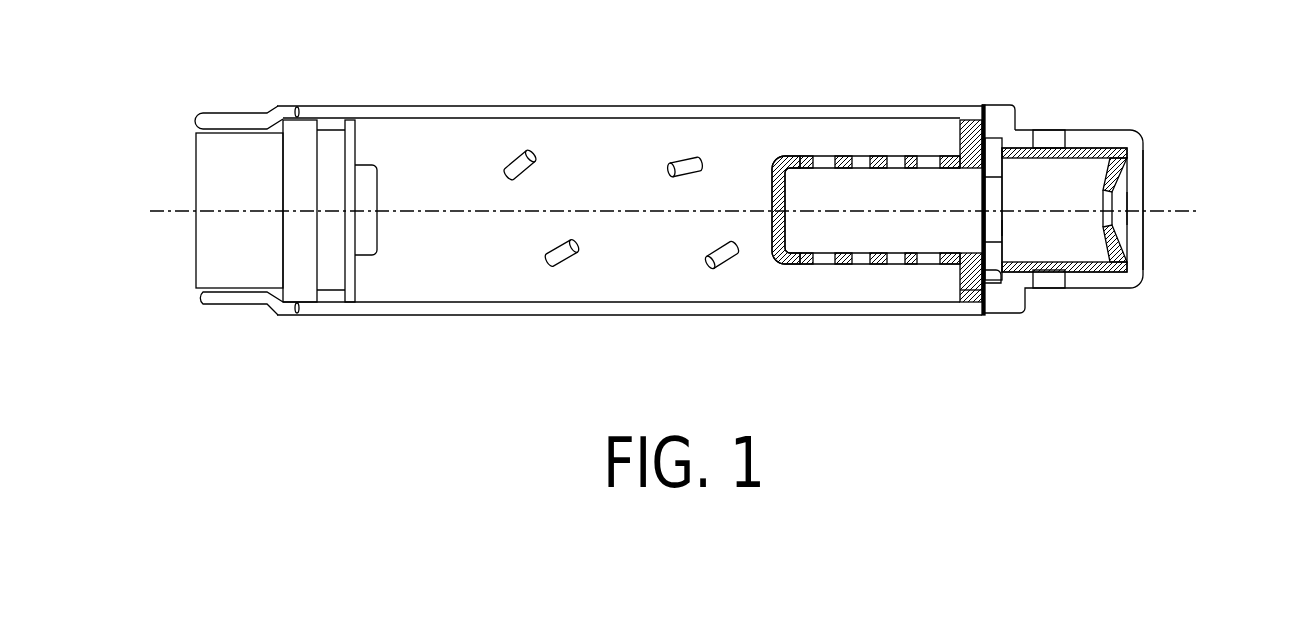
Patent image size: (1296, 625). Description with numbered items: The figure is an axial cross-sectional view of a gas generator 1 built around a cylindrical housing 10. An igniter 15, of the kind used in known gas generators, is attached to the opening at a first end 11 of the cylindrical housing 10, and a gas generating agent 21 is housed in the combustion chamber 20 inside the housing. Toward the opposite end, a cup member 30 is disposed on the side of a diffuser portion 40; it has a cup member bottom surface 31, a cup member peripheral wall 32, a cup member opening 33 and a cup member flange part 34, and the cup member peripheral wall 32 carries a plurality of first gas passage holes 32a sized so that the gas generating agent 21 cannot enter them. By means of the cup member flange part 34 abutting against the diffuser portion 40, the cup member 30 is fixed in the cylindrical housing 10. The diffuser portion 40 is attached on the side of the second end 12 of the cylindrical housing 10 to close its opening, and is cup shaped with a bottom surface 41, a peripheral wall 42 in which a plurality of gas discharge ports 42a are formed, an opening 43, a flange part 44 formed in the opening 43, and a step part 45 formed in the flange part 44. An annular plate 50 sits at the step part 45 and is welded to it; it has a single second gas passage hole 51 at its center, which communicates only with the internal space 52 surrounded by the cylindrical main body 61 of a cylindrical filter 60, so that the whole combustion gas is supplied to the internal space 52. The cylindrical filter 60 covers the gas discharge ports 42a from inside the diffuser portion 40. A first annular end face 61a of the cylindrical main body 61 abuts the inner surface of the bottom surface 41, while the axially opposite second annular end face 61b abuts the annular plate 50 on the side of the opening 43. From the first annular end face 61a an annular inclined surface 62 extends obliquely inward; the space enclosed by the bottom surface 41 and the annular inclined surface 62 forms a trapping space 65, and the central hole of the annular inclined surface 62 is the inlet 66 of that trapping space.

The gas generator 1 is at (484, 77).
The cylindrical housing 10 is at (677, 105).
The first end 11 is at (203, 122).
The second end 12 is at (992, 106).
The igniter 15 is at (217, 258).
The combustion chamber 20 is at (585, 194).
The gas generating agent 21 is at (690, 177).
The cup member 30 is at (816, 219).
The cup member bottom surface 31 is at (772, 220).
The cup member peripheral wall 32 is at (878, 155).
The first gas passage holes 32a is at (857, 265).
The cup member opening 33 is at (1003, 228).
The cup member flange part 34 is at (965, 118).
The diffuser portion 40 is at (1124, 208).
The bottom surface 41 is at (1143, 243).
The peripheral wall 42 is at (1088, 290).
The gas discharge ports 42a is at (1050, 129).
The opening 43 is at (953, 264).
The flange part 44 is at (1013, 115).
The step part 45 is at (985, 290).
The annular plate 50 is at (980, 173).
The second gas passage hole 51 is at (1002, 184).
The internal space 52 is at (1067, 191).
The cylindrical filter 60 is at (1137, 225).
The cylindrical main body 61 is at (1115, 148).
The first annular end face 61a is at (1128, 268).
The second annular end face 61b is at (965, 300).
The annular inclined surface 62 is at (1118, 172).
The trapping space 65 is at (1122, 217).
The inlet 66 is at (1100, 223).